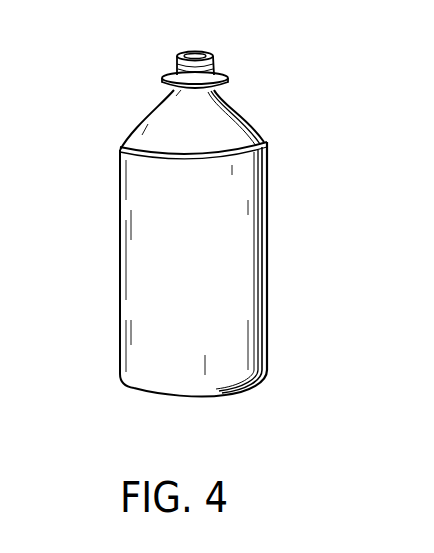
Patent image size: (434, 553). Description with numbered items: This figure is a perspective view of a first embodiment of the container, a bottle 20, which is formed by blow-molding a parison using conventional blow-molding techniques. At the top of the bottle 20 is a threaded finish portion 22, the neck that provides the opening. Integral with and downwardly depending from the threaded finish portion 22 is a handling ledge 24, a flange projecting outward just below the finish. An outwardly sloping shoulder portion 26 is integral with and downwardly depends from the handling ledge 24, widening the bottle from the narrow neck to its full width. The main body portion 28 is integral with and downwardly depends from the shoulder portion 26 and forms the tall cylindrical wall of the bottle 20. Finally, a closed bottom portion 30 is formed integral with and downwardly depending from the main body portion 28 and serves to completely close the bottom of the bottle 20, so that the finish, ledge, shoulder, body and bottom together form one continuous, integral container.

The bottle 20 is at (98, 263).
The threaded finish portion 22 is at (216, 58).
The handling ledge 24 is at (229, 79).
The outwardly sloping shoulder portion 26 is at (265, 136).
The main body portion 28 is at (266, 288).
The closed bottom portion 30 is at (190, 398).